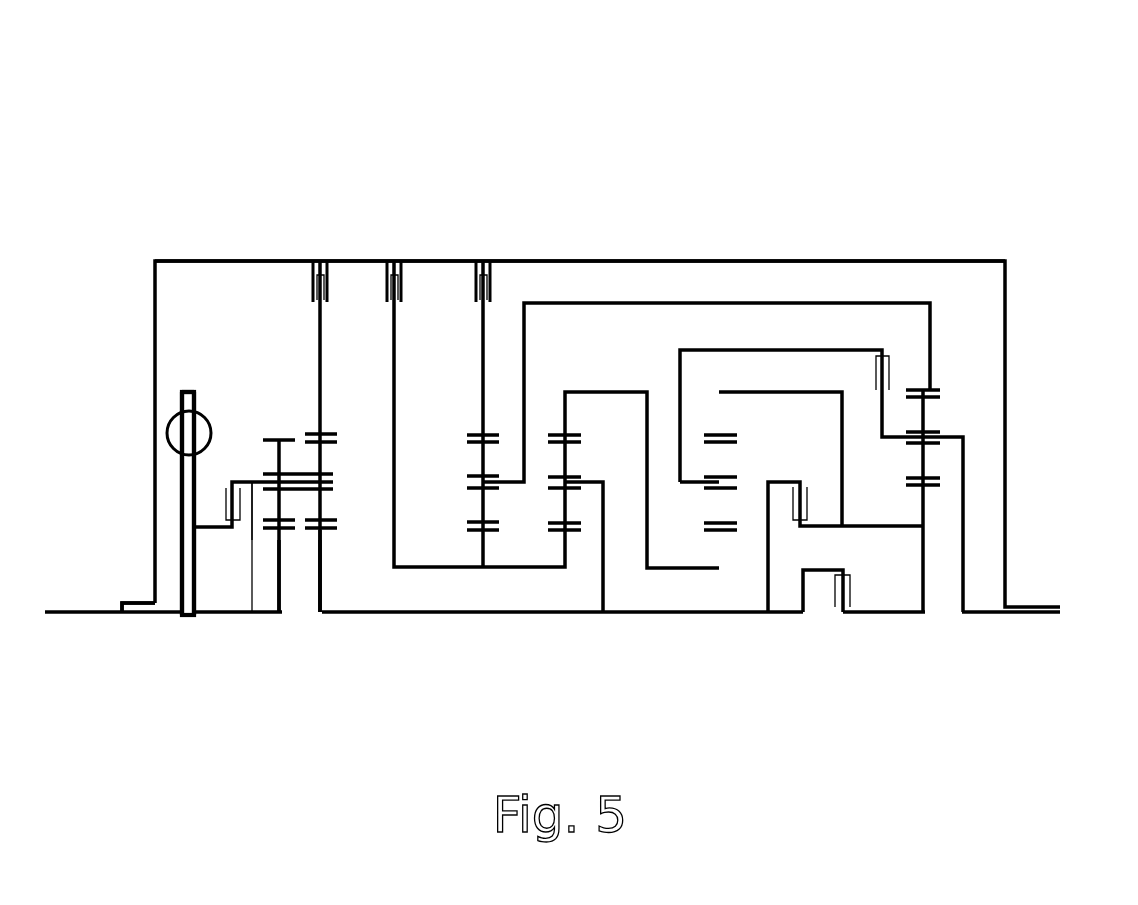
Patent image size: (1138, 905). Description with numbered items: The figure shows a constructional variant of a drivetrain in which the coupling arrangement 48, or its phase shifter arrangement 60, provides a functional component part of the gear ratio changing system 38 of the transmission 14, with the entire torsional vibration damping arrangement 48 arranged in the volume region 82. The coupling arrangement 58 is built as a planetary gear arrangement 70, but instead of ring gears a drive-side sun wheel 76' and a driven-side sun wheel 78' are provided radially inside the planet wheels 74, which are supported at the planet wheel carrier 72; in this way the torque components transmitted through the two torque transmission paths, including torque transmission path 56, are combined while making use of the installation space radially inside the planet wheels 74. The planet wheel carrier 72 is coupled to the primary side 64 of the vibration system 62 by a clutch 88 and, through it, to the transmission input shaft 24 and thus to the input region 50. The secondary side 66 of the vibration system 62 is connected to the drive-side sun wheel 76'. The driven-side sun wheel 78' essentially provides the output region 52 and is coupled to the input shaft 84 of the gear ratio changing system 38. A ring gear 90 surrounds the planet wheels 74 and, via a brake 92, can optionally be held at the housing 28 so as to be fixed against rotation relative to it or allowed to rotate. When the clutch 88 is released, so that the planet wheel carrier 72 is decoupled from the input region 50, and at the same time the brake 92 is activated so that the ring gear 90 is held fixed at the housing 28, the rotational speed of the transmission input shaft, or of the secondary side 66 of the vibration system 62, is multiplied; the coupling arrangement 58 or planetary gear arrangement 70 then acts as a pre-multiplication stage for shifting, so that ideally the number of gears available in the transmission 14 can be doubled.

The transmission 14 is at (745, 200).
The transmission input shaft 24 is at (93, 609).
The housing 28 is at (663, 259).
The gear ratio changing system 38 is at (811, 286).
The torsional vibration damping arrangement 48 is at (184, 353).
The input region 50 is at (146, 624).
The output region 52 is at (329, 592).
The torque transmission path 56 is at (247, 438).
The coupling arrangement 58 is at (280, 341).
The phase shifter arrangement 60 is at (196, 375).
The vibration system 62 is at (171, 403).
The primary side 64 is at (181, 532).
The secondary side 66 is at (193, 560).
The planetary gear arrangement 70 is at (350, 582).
The planet wheel carrier 72 is at (252, 612).
The planet wheels 74 is at (324, 459).
The drive-side sun wheel 76' is at (304, 634).
The driven-side sun wheel 78' is at (416, 609).
The volume region 82 is at (908, 285).
The input shaft of the gear ratio changing system 84 is at (563, 614).
The clutch 88 is at (228, 460).
The ring gear 90 is at (318, 352).
The brake 92 is at (330, 283).